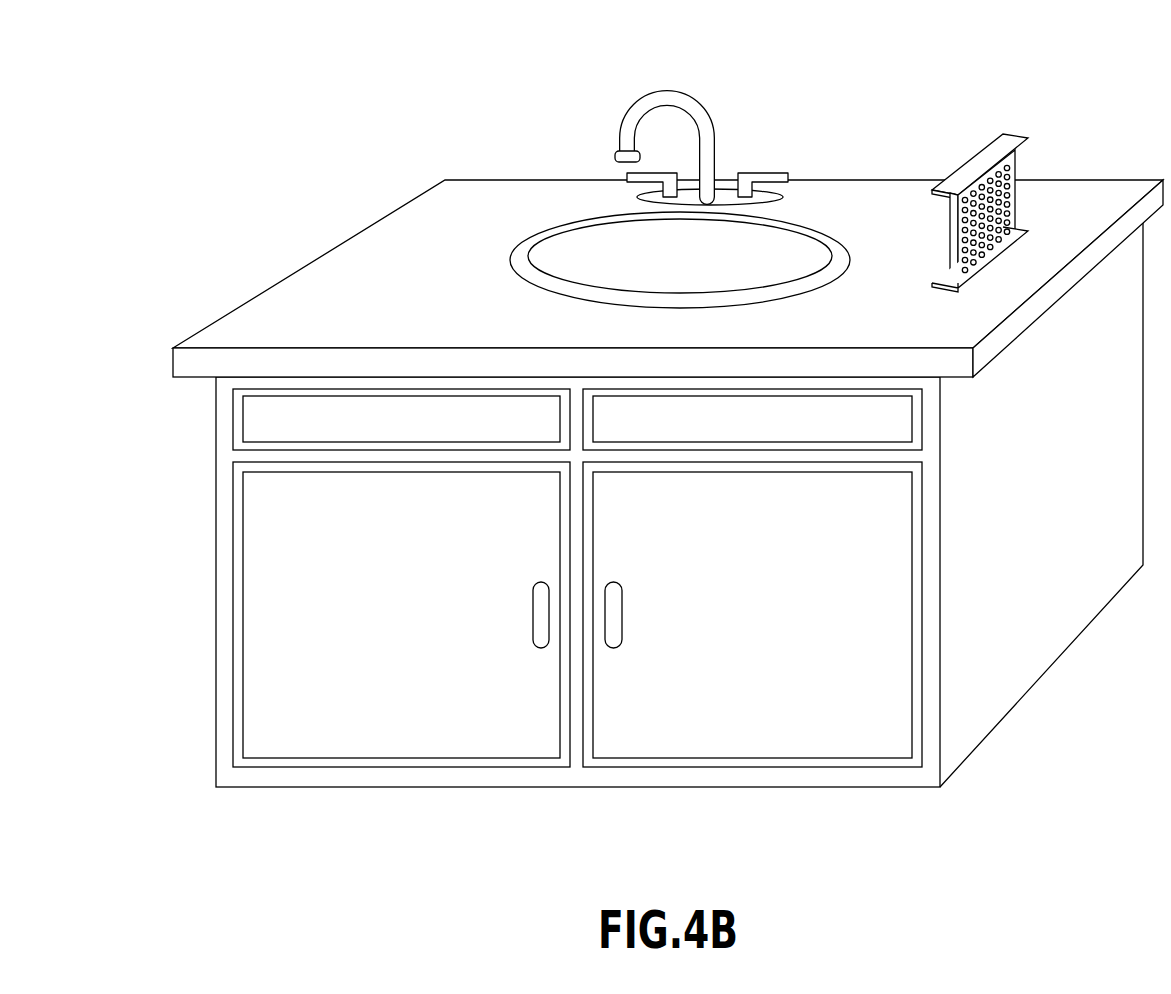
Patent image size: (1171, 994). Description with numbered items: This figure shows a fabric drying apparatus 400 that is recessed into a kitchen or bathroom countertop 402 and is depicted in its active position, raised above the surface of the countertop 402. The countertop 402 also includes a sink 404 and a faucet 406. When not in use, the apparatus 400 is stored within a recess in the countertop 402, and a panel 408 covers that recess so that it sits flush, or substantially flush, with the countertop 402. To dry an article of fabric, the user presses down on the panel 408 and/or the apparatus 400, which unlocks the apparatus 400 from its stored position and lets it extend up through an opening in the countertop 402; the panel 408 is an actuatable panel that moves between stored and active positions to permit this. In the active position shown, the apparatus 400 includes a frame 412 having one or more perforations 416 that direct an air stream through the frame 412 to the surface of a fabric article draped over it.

The fabric drying apparatus 400 is at (668, 405).
The countertop 402 is at (343, 257).
The sink 404 is at (568, 255).
The faucet 406 is at (640, 97).
The panel 408 is at (973, 207).
The frame 412 is at (955, 238).
The perforations 416 is at (1005, 203).